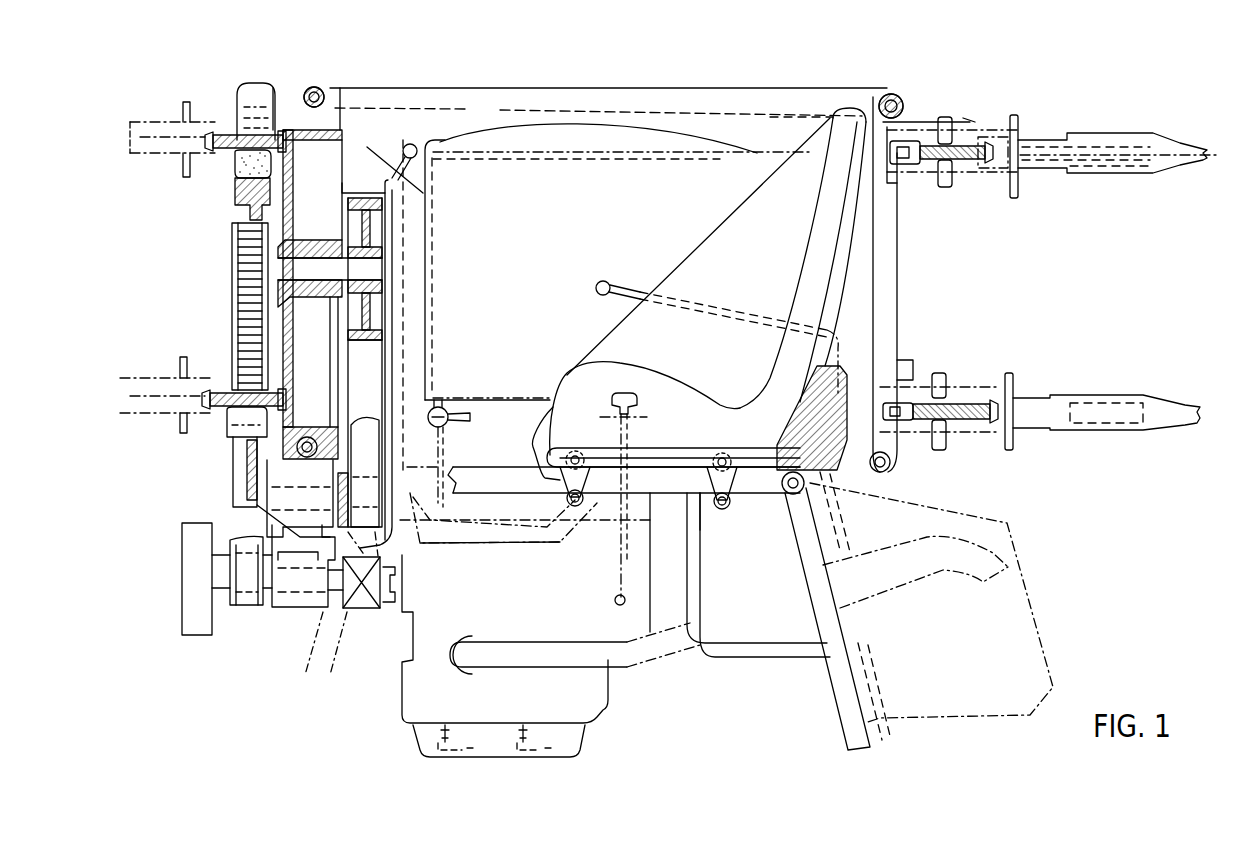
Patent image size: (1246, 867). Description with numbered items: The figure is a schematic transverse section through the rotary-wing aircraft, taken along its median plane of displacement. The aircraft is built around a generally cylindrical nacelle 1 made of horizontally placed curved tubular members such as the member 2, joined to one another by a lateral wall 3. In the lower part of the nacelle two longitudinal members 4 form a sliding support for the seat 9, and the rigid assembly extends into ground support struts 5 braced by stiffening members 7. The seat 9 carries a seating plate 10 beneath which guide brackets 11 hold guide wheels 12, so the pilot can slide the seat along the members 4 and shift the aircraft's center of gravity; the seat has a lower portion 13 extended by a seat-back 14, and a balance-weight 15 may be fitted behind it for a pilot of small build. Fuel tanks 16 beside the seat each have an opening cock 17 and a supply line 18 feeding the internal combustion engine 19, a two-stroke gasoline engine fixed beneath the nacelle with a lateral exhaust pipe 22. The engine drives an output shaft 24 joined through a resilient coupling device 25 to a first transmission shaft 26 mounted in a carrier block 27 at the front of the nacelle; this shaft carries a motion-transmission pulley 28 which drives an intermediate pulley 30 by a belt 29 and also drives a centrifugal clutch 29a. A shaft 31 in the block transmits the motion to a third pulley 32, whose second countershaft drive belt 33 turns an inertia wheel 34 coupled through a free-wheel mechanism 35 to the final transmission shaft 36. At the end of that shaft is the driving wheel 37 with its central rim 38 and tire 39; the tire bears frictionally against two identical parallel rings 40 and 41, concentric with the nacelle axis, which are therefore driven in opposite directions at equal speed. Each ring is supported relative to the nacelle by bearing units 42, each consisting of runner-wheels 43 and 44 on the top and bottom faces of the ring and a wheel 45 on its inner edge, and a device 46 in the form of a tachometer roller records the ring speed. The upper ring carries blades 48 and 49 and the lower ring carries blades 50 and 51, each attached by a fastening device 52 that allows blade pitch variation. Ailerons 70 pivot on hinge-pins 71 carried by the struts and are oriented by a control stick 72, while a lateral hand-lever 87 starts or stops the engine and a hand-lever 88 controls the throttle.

The nacelle 1 is at (737, 86).
The curved tubular member 2 is at (318, 86).
The lateral wall 3 is at (883, 293).
The longitudinal members 4 is at (755, 495).
The ground support struts 5 is at (847, 727).
The stiffening members 7 is at (733, 648).
The seat 9 is at (654, 445).
The seating plate 10 is at (684, 455).
The guide brackets 11 is at (708, 508).
The guide wheels 12 is at (574, 448).
The lower portion 13 is at (623, 373).
The seat-back 14 is at (792, 275).
The balance-weight 15 is at (847, 378).
The fuel tanks 16 is at (612, 187).
The opening cock 17 is at (445, 400).
The supply line 18 is at (448, 442).
The internal combustion engine 19 is at (562, 615).
The lateral exhaust pipe 22 is at (600, 657).
The output shaft 24 is at (413, 553).
The resilient coupling device 25 is at (367, 618).
The first transmission shaft 26 is at (220, 592).
The carrier block 27 is at (328, 130).
The motion-transmission pulley 28 is at (230, 552).
The belt 29 is at (252, 605).
The centrifugal clutch 29a is at (190, 618).
The intermediate pulley 30 is at (247, 462).
The shaft 31 is at (267, 497).
The third pulley 32 is at (420, 380).
The second countershaft drive belt 33 is at (385, 398).
The inertia wheel 34 is at (382, 206).
The free-wheel mechanism 35 is at (382, 262).
The final transmission shaft 36 is at (313, 268).
The driving wheel 37 is at (230, 296).
The central rim 38 is at (236, 190).
The tire 39 is at (233, 158).
The upper ring 40 is at (236, 140).
The lower ring 41 is at (227, 392).
The bearing units 42 is at (975, 103).
The runner-wheel 43 is at (963, 120).
The runner-wheel 44 is at (948, 188).
The runner-wheel 45 is at (907, 160).
The speed recording device 46 is at (248, 84).
The blade 48 is at (1117, 133).
The blade 49 is at (153, 122).
The blade 50 is at (1110, 395).
The blade 51 is at (223, 430).
The fastening device 52 is at (995, 173).
The ailerons 70 is at (1037, 613).
The hinge-pin 71 is at (877, 675).
The control stick 72 is at (620, 290).
The lateral hand-lever 87 is at (632, 393).
The hand-lever 88 is at (412, 143).